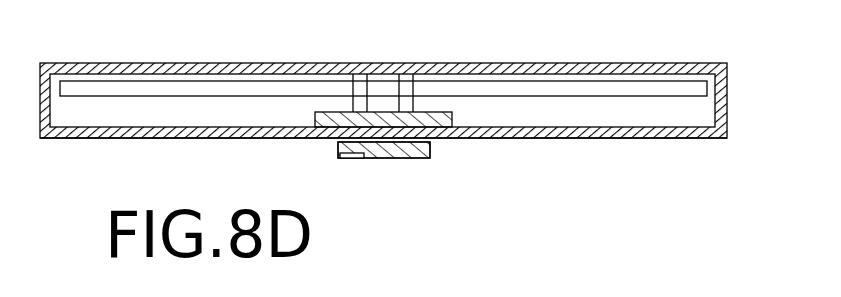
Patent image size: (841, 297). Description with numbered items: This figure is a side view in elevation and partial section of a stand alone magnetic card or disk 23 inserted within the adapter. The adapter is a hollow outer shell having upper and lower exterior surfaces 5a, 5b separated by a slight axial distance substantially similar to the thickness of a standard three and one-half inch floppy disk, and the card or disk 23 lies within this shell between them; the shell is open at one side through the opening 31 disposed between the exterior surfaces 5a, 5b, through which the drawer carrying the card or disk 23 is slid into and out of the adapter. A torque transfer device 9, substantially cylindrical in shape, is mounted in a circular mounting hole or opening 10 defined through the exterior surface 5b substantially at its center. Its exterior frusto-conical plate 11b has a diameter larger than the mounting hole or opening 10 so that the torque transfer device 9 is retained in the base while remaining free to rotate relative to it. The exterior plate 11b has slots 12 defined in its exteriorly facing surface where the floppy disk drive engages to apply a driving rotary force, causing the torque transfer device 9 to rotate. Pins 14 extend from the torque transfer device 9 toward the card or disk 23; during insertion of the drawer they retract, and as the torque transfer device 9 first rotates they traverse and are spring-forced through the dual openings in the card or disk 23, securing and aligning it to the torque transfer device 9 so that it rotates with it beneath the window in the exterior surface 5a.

The exterior surface 5a is at (635, 63).
The exterior surface 5b is at (615, 140).
The card or disk 23 is at (123, 90).
The opening 31 is at (133, 117).
The pins 14 is at (412, 63).
The torque transfer device 9 is at (315, 117).
The mounting hole or opening 10 is at (435, 139).
The exterior frusto-conical plate 11b is at (392, 160).
The slots 12 is at (350, 160).